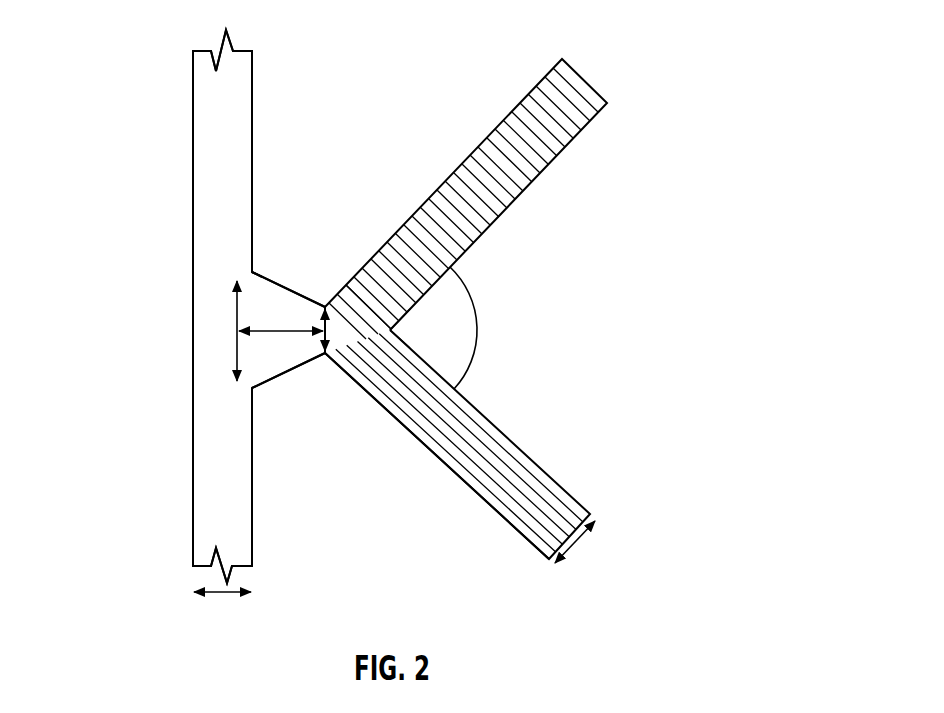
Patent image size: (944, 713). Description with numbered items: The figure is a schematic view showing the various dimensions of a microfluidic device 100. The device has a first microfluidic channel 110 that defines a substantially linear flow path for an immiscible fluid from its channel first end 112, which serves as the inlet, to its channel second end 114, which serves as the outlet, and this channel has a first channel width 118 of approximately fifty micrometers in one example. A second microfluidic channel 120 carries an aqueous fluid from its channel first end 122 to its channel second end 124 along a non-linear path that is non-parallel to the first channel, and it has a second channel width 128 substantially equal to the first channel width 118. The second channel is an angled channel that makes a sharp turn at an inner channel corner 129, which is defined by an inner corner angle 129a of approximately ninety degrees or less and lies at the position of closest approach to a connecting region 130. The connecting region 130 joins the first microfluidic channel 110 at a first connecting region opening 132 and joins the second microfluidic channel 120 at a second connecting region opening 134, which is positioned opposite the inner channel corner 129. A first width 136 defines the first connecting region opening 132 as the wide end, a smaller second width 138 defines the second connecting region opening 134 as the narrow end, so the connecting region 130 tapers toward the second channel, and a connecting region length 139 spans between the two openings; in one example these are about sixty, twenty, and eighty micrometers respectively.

The microfluidic device 100 is at (118, 37).
The first microfluidic channel 110 is at (193, 455).
The channel first end 112 is at (252, 558).
The channel second end 114 is at (252, 60).
The first channel width 118 is at (218, 597).
The second microfluidic channel 120 is at (492, 506).
The channel first end 122 is at (568, 494).
The channel second end 124 is at (590, 117).
The second channel width 128 is at (578, 545).
The inner channel corner 129 is at (393, 329).
The inner corner angle 129a is at (479, 330).
The connecting region 130 is at (270, 278).
The first connecting region opening 132 is at (247, 280).
The second connecting region opening 134 is at (350, 330).
The first width 136 is at (237, 314).
The second width 138 is at (326, 354).
The connecting region length 139 is at (254, 334).